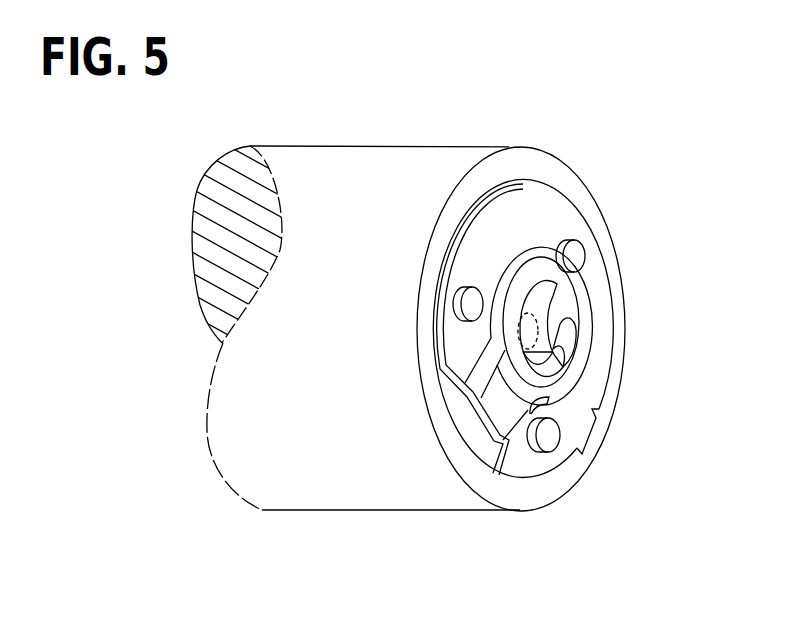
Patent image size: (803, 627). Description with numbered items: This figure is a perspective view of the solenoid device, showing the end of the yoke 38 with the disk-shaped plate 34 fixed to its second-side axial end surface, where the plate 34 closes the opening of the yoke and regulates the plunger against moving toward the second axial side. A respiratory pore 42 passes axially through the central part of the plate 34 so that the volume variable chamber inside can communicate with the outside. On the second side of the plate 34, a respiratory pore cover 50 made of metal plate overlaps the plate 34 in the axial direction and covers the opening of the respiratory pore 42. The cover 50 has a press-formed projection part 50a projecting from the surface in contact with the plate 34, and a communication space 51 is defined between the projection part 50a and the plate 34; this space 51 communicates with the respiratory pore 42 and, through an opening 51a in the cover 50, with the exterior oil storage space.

The yoke 38 is at (446, 178).
The plate 34 is at (427, 396).
The respiratory pore cover 50 is at (560, 343).
The projection part 50a is at (500, 422).
The respiratory pore 42 is at (538, 331).
The opening 51a is at (473, 412).
The communication space 51 is at (459, 390).